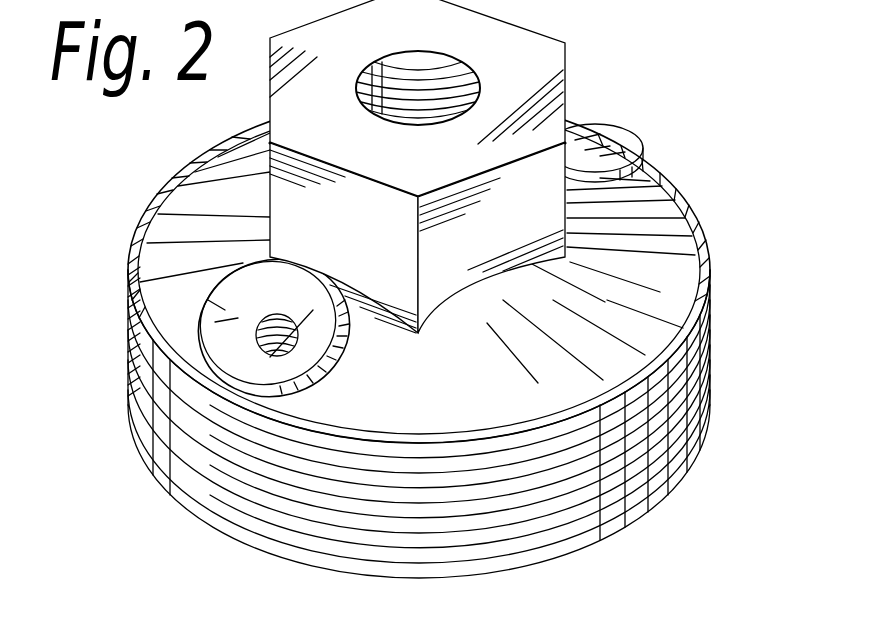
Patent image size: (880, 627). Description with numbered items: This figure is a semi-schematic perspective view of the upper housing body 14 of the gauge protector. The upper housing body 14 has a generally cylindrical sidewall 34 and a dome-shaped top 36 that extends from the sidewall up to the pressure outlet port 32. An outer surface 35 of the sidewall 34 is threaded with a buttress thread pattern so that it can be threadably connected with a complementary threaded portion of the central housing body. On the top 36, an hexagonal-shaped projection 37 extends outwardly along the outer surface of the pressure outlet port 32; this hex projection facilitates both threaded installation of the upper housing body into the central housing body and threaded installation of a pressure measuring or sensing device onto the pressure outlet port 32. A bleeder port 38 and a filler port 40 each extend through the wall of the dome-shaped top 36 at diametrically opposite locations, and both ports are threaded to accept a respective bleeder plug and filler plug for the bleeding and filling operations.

The upper housing body 14 is at (434, 289).
The pressure outlet port 32 is at (447, 77).
The cylindrical sidewall 34 is at (466, 337).
The outer surface 35 is at (660, 437).
The dome-shaped top 36 is at (670, 300).
The hexagonal-shaped projection 37 is at (344, 166).
The bleeder port 38 is at (600, 139).
The filler port 40 is at (252, 317).